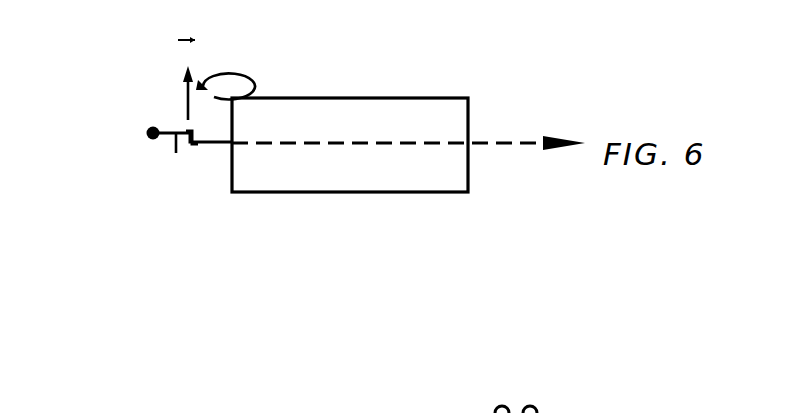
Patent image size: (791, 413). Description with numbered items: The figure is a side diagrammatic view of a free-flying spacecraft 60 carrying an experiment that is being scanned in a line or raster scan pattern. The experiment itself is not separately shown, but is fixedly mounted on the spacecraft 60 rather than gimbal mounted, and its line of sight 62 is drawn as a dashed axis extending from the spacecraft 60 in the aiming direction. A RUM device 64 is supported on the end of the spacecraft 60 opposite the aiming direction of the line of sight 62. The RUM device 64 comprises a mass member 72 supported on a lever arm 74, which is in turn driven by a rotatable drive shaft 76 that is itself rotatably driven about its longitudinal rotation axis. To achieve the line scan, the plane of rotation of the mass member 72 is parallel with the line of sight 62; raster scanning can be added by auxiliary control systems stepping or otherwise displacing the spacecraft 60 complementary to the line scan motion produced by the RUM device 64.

The free-flying spacecraft 60 is at (350, 84).
The line of sight 62 is at (503, 143).
The RUM device 64 is at (131, 168).
The mass member 72 is at (148, 132).
The lever arm 74 is at (174, 159).
The rotatable drive shaft 76 is at (193, 142).